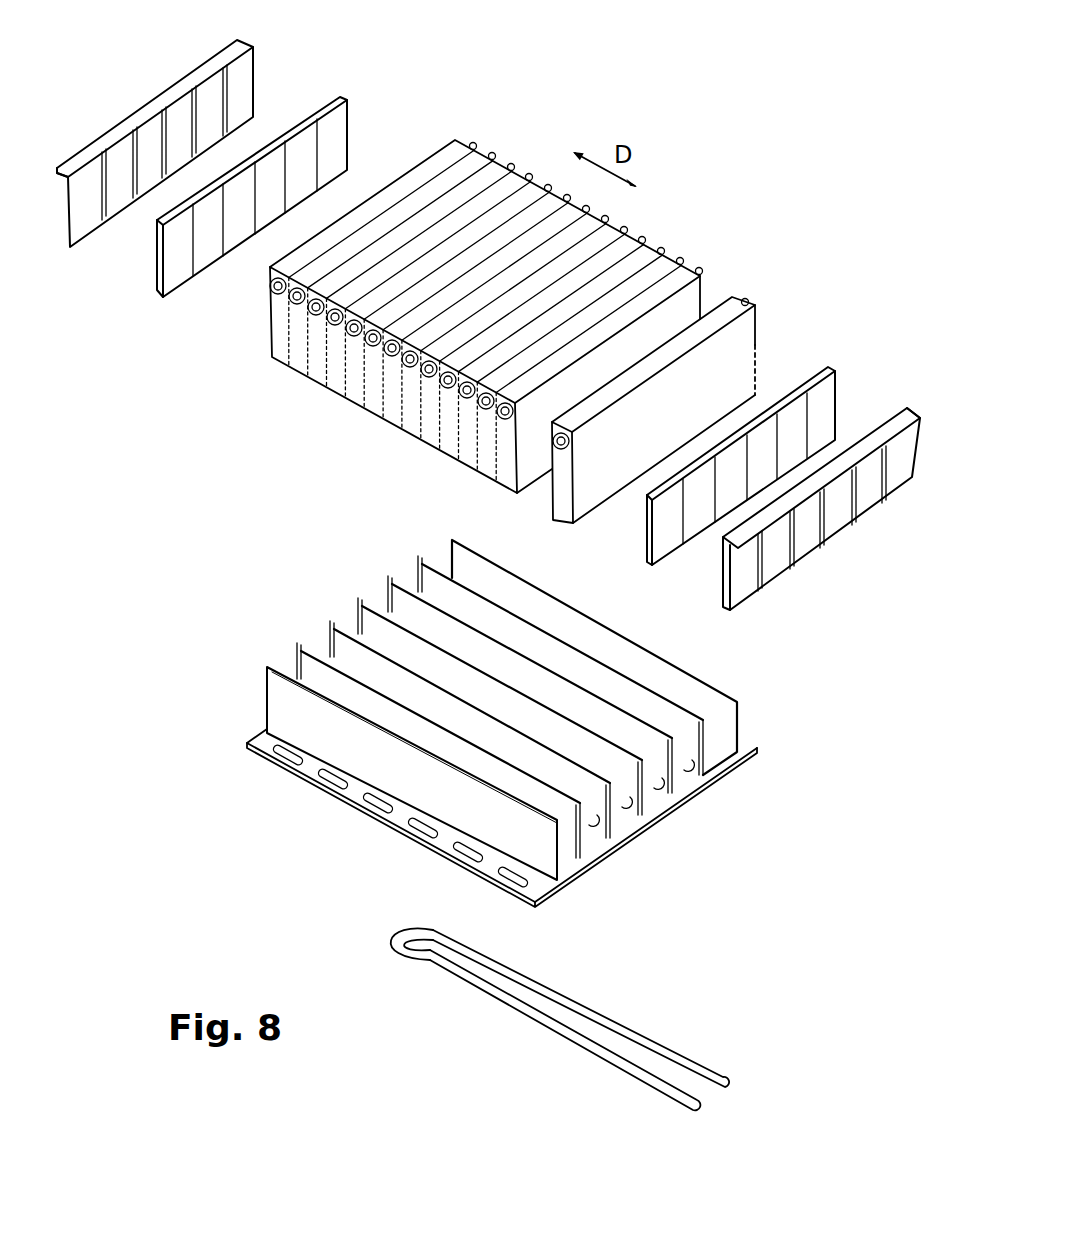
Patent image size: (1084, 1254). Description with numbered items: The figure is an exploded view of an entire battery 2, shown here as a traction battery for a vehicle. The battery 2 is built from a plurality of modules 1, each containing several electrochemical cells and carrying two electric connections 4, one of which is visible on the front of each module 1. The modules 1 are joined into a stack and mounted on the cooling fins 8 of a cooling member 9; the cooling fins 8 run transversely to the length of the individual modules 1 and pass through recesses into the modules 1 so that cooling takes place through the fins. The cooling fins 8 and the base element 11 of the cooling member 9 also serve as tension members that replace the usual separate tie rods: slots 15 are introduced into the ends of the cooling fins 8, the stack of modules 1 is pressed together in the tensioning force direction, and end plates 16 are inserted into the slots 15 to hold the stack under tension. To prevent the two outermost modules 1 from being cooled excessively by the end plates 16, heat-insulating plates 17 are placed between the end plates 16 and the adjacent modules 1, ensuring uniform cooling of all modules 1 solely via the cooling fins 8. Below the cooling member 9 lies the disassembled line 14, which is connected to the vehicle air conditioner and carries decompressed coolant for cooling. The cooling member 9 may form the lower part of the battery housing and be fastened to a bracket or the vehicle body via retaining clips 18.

The module 1 is at (457, 147).
The battery 2 is at (500, 308).
The electric connection 4 is at (308, 309).
The cooling fin 8 is at (530, 797).
The cooling member 9 is at (536, 720).
The base element 11 is at (730, 757).
The line 14 is at (636, 1040).
The slot 15 is at (420, 562).
The end plate 16 is at (248, 79).
The heat-insulating plate 17 is at (335, 140).
The retaining clip 18 is at (353, 793).